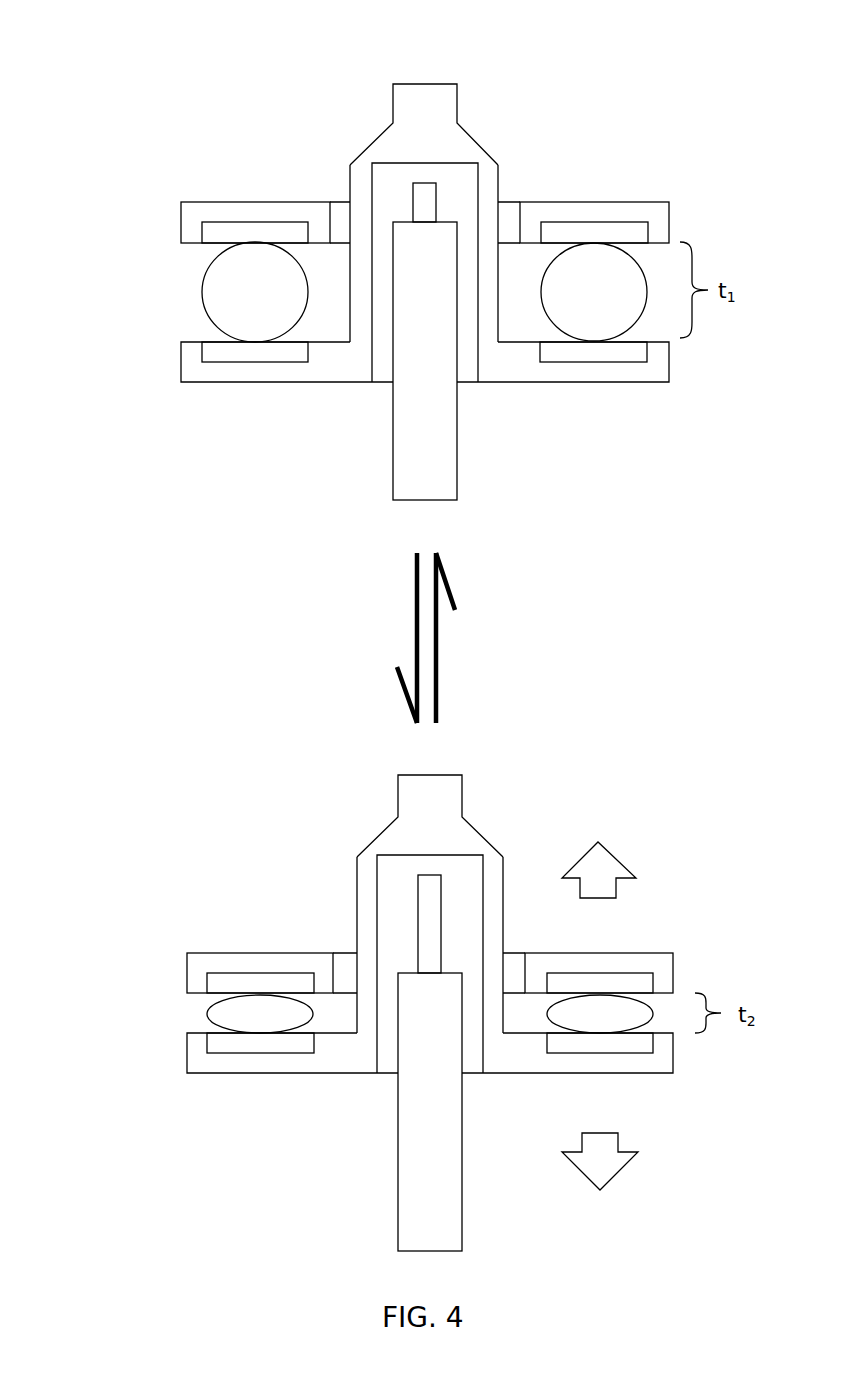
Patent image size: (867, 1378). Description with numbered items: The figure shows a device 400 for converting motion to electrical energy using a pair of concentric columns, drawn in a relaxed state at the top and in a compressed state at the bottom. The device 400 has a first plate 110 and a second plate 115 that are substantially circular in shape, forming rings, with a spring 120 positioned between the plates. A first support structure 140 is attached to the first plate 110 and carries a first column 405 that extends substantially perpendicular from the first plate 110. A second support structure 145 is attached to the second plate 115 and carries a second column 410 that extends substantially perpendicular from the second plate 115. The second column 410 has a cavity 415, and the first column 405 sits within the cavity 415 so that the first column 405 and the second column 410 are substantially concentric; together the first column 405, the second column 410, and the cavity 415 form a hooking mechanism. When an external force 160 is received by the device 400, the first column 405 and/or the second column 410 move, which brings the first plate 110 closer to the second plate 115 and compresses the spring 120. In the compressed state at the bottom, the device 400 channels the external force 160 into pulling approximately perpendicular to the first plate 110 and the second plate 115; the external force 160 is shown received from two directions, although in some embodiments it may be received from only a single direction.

The device 400 is at (622, 68).
The first column 405 is at (408, 463).
The second column 410 is at (443, 133).
The cavity 415 is at (388, 187).
The first plate 110 is at (247, 233).
The second plate 115 is at (225, 348).
The spring 120 is at (178, 286).
The first support structure 140 is at (277, 215).
The second support structure 145 is at (267, 370).
The external force 160 is at (620, 938).